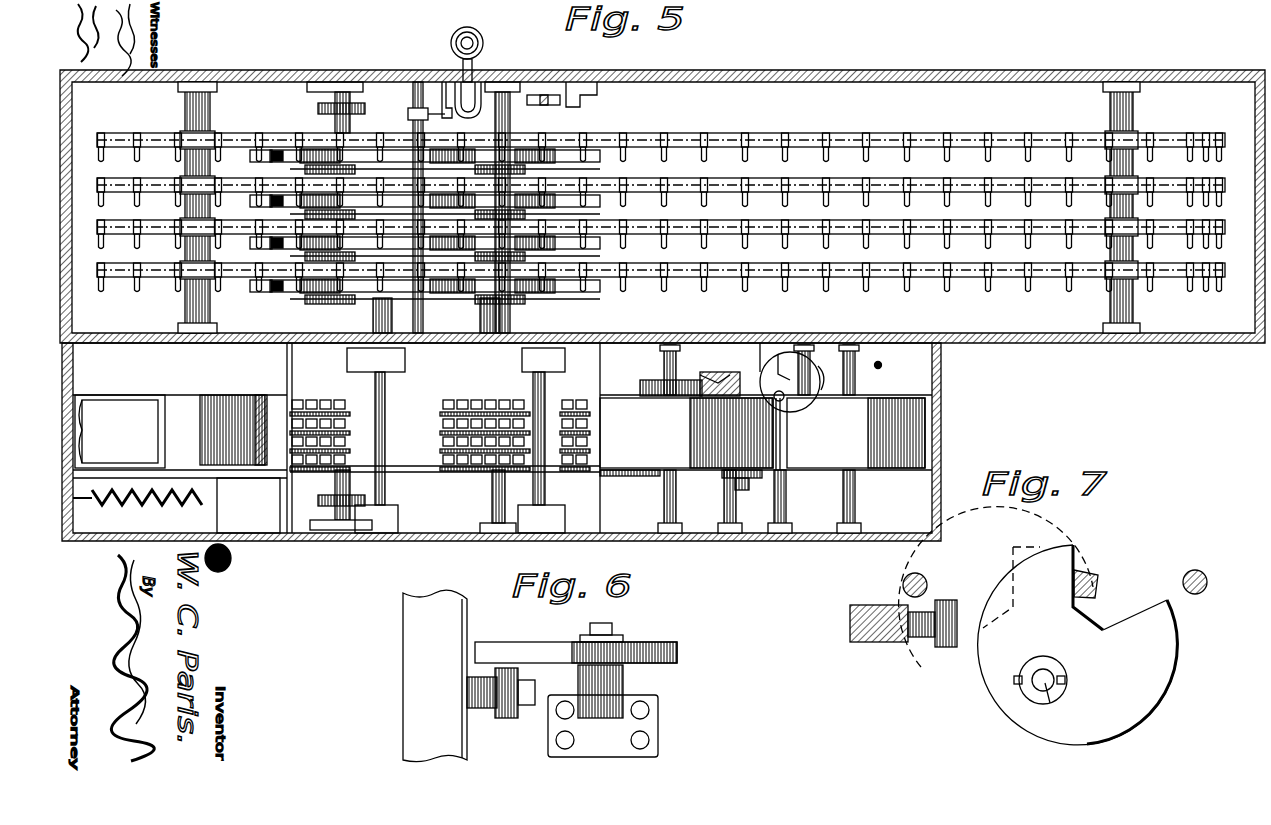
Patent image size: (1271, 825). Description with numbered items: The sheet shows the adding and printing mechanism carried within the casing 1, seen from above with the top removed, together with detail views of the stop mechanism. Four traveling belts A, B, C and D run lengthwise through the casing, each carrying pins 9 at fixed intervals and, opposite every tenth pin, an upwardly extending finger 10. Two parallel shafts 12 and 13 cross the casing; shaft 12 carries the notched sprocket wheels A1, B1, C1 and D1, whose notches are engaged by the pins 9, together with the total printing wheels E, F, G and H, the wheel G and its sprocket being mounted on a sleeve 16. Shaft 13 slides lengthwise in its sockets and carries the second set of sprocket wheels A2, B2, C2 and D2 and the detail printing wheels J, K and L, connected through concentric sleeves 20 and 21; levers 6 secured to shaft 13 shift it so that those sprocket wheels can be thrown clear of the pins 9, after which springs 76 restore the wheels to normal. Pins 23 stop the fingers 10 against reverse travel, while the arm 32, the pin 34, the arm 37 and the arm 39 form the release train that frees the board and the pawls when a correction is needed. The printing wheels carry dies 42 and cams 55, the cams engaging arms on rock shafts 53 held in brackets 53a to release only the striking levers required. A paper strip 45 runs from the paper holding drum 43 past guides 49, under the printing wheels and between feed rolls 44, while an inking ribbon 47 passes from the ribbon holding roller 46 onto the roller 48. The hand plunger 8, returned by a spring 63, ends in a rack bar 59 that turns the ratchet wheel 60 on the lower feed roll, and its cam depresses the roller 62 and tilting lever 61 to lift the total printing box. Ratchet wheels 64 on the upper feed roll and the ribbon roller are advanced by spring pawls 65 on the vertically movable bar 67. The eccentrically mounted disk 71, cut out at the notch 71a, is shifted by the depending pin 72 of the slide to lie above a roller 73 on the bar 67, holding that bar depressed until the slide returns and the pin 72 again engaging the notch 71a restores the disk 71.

In FIG. 5, the casing 1 is at (747, 72).
In FIG. 5, the levers 6 is at (316, 108).
In FIG. 5, the hand-operated plunger 8 is at (950, 478).
In FIG. 5, the pins 9 is at (590, 150).
In FIG. 5, the fingers 10 is at (678, 127).
In FIG. 5, the shaft 12 is at (512, 125).
In FIG. 5, the shaft 13 is at (352, 104).
In FIG. 5, the sleeve 16 is at (471, 107).
In FIG. 5, the sleeve 20 is at (478, 305).
In FIG. 5, the sleeve 21 is at (448, 213).
In FIG. 5, the pins 23 is at (429, 387).
In FIG. 5, the arm 32 is at (545, 95).
In FIG. 5, the pin 34 is at (484, 56).
In FIG. 5, the arm 37 is at (444, 98).
In FIG. 5, the arm 39 is at (408, 116).
In FIG. 5, the dies 42 is at (500, 398).
In FIG. 5, the paper holding drum 43 is at (896, 475).
In FIG. 5, the feed rolls 44 is at (782, 478).
In FIG. 5, the strip of paper 45 is at (686, 433).
In FIG. 5, the ribbon holding roller 46 is at (228, 397).
In FIG. 5, the inking ribbon 47 is at (320, 398).
In FIG. 5, the roller 48 is at (706, 475).
In FIG. 5, the guides 49 is at (120, 412).
In FIG. 5, the rock shafts 53 is at (582, 387).
In FIG. 5, the brackets 53a is at (345, 552).
In FIG. 5, the cams 55 is at (400, 440).
In FIG. 5, the rack bar 59 is at (652, 480).
In FIG. 5, the ratchet wheel 60 is at (752, 480).
In FIG. 5, the tilting lever 61 is at (420, 484).
In FIG. 5, the roller 62 is at (400, 488).
In FIG. 5, the spring 63 is at (108, 506).
In FIG. 5, the ratchet wheels 64 is at (650, 382).
In FIG. 5, the spring pawls 65 is at (712, 382).
In FIG. 5, the vertically movable bar 67 is at (742, 343).
In FIG. 7, the vertically movable bar 67 is at (860, 628).
In FIG. 5, the eccentrically mounted disk 71 is at (790, 382).
In FIG. 6, the eccentrically mounted disk 71 is at (545, 648).
In FIG. 7, the eccentrically mounted disk 71 is at (1038, 626).
In FIG. 5, the notch 71a is at (822, 400).
In FIG. 7, the notch 71a is at (1125, 625).
In FIG. 5, the depending pin 72 is at (882, 365).
In FIG. 7, the depending pin 72 is at (1186, 576).
In FIG. 5, the roller 73 is at (776, 343).
In FIG. 6, the roller 73 is at (508, 708).
In FIG. 7, the roller 73 is at (920, 640).
In FIG. 5, the springs 76 is at (410, 265).
In FIG. 5, the traveling belt A is at (768, 133).
In FIG. 5, the traveling belt B is at (797, 178).
In FIG. 5, the traveling belt C is at (760, 220).
In FIG. 5, the traveling belt D is at (797, 263).
In FIG. 5, the sprocket wheel A1 is at (575, 160).
In FIG. 5, the sprocket wheel B1 is at (575, 204).
In FIG. 5, the sprocket wheel C1 is at (575, 246).
In FIG. 5, the sprocket wheel D1 is at (578, 289).
In FIG. 5, the sprocket wheel A2 is at (268, 158).
In FIG. 5, the sprocket wheel B2 is at (268, 203).
In FIG. 5, the sprocket wheel C2 is at (268, 246).
In FIG. 5, the sprocket wheel D2 is at (230, 300).
In FIG. 5, the printing wheel E is at (560, 498).
In FIG. 5, the printing wheel F is at (610, 431).
In FIG. 5, the printing wheel G is at (586, 413).
In FIG. 5, the printing wheel H is at (516, 401).
In FIG. 5, the printing wheel J is at (422, 409).
In FIG. 5, the printing wheel K is at (264, 457).
In FIG. 5, the printing wheel L is at (352, 396).